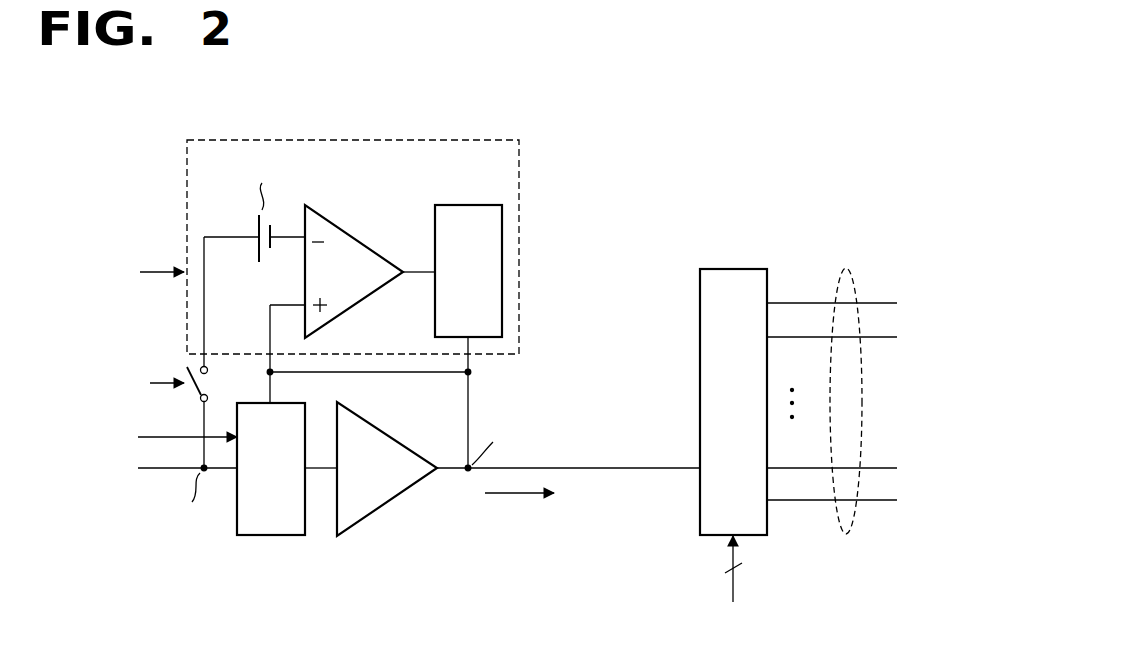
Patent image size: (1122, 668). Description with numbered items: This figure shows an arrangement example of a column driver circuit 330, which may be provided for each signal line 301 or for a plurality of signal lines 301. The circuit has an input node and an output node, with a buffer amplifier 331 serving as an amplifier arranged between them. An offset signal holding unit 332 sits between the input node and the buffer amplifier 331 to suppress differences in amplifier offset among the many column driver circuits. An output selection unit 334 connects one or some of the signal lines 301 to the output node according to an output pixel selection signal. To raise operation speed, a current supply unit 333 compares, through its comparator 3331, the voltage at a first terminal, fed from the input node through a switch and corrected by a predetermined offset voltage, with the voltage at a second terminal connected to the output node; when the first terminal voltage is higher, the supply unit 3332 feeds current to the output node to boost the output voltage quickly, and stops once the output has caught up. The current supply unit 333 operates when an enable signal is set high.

The column driver circuit 330 is at (617, 77).
The current supply unit 333 is at (187, 163).
The comparator 3331 is at (347, 233).
The supply unit 3332 is at (477, 204).
The offset signal holding unit 332 is at (273, 537).
The buffer amplifier 331 is at (382, 503).
The output selection unit 334 is at (735, 268).
The signal line 301 is at (846, 268).